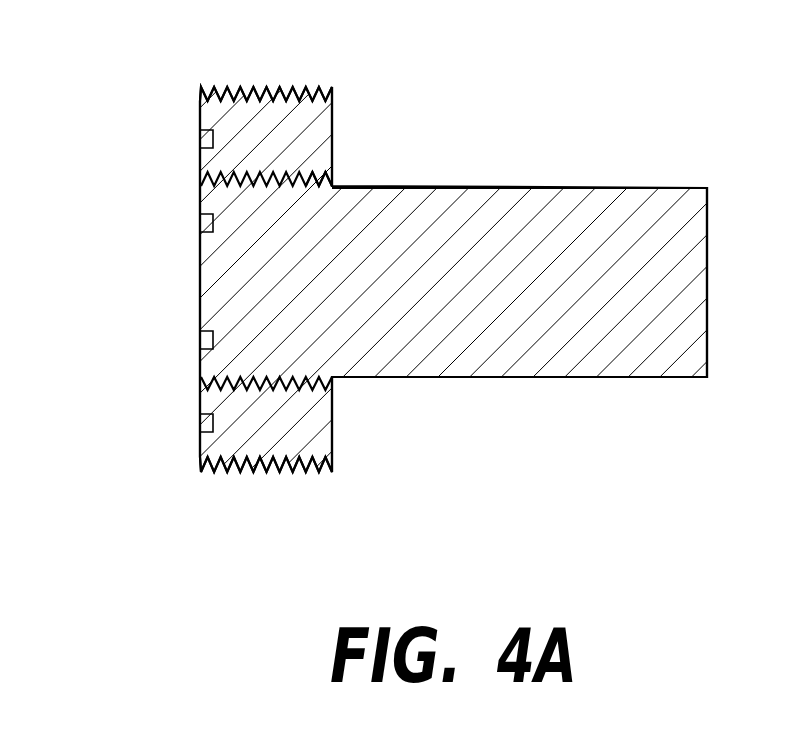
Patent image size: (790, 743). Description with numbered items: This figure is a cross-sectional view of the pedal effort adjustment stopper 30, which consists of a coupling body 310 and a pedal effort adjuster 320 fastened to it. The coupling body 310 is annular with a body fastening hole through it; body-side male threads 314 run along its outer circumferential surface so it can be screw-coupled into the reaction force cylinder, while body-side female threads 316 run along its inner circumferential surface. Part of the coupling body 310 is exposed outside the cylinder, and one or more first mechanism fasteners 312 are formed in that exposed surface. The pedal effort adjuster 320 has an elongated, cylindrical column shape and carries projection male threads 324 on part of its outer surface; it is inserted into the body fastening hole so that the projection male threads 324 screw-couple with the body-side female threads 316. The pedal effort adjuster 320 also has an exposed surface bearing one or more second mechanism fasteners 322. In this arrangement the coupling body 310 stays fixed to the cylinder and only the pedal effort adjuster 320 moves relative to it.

The pedal effort adjustment stopper 30 is at (120, 343).
The coupling body 310 is at (333, 144).
The first mechanism fasteners 312 is at (201, 425).
The body-side male threads 314 is at (272, 98).
The body-side female threads 316 is at (199, 179).
The pedal effort adjuster 320 is at (545, 192).
The second mechanism fasteners 322 is at (201, 224).
The projection male threads 324 is at (333, 181).